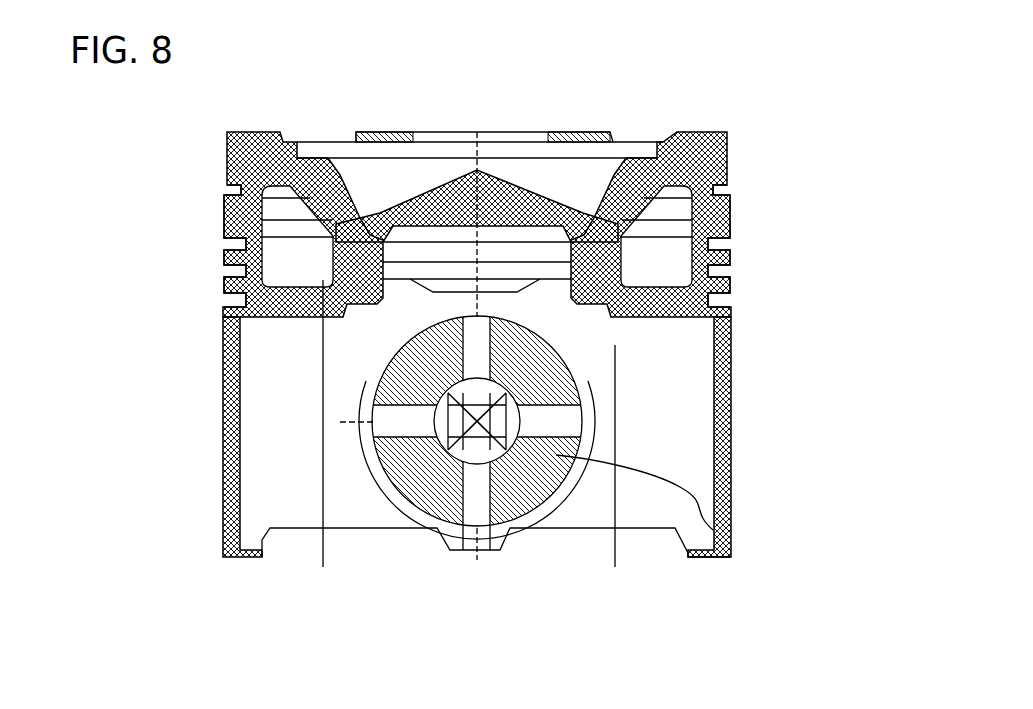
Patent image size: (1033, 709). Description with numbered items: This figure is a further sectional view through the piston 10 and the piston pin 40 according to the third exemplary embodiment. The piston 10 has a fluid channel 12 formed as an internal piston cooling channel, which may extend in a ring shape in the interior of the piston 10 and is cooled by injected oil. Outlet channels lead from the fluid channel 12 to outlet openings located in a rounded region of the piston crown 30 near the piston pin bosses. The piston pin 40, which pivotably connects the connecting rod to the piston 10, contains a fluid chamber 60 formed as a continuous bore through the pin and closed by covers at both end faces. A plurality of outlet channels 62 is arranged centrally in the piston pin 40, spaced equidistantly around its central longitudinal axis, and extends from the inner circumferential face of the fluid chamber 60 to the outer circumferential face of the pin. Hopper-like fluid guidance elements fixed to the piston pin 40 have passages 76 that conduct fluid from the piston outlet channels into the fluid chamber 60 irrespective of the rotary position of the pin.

The piston 10 is at (227, 163).
The fluid channel 12 is at (224, 225).
The piston crown 30 is at (288, 320).
The piston pin 40 is at (555, 495).
The fluid chamber 60 is at (733, 533).
The outlet channels 62 is at (443, 367).
The passages 76 is at (418, 400).